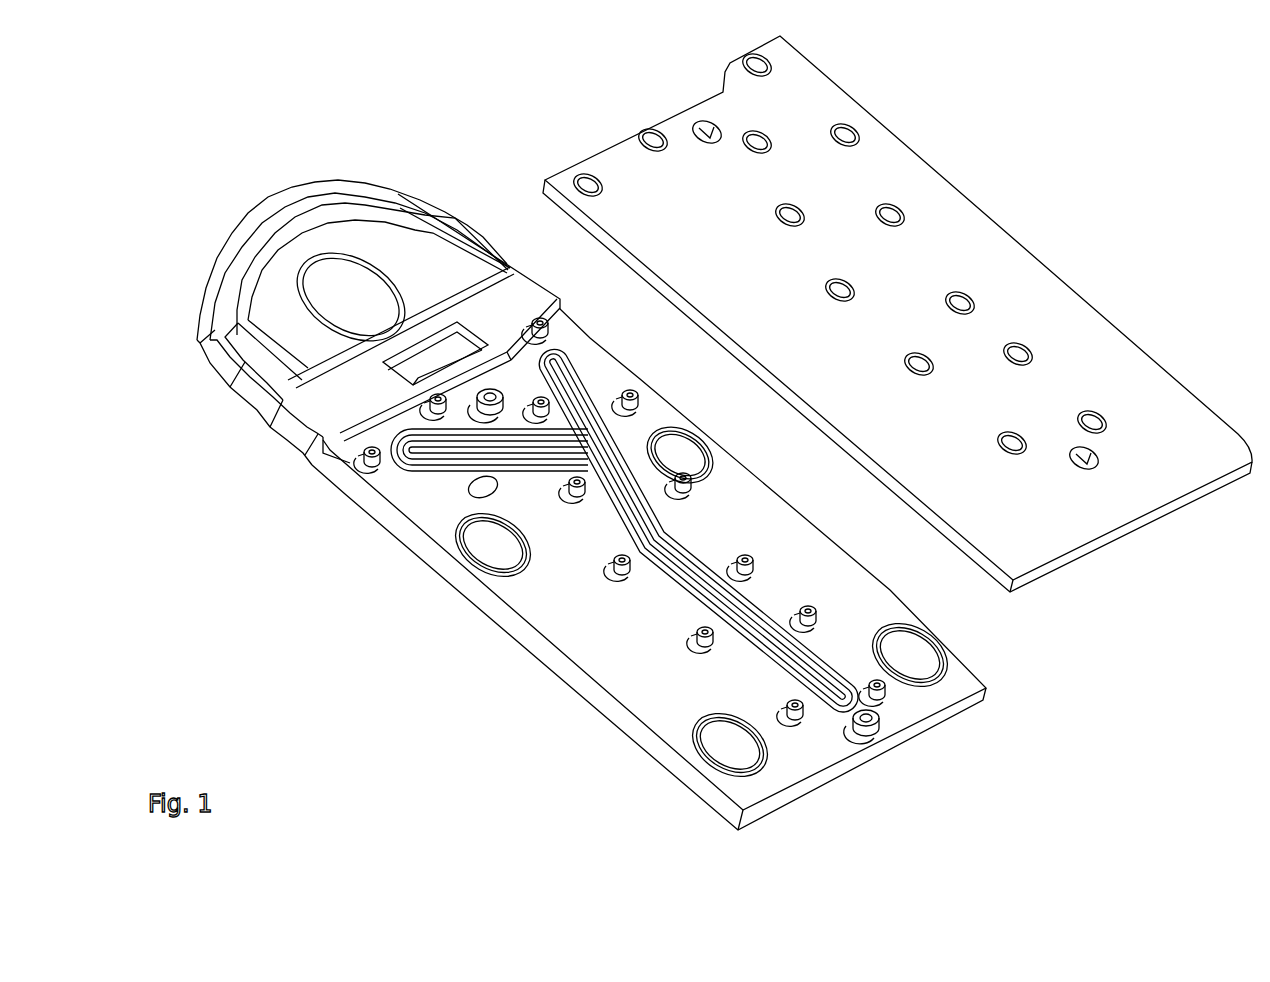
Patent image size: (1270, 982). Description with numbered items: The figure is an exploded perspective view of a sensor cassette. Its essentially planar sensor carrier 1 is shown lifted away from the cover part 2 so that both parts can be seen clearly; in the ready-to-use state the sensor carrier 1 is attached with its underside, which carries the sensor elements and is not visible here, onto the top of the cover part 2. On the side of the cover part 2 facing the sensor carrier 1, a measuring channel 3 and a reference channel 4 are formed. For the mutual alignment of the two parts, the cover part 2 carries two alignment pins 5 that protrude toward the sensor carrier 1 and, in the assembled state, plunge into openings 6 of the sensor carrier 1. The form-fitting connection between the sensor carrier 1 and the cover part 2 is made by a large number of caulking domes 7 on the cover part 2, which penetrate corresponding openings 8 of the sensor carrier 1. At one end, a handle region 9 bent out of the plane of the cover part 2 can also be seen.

The sensor carrier 1 is at (1000, 262).
The cover part 2 is at (558, 626).
The measuring channel 3 is at (763, 650).
The reference channel 4 is at (407, 468).
The alignment pin 5 is at (492, 388).
The opening 6 is at (708, 128).
The caulking dome 7 is at (681, 472).
The opening 8 is at (890, 210).
The handle region 9 is at (280, 203).